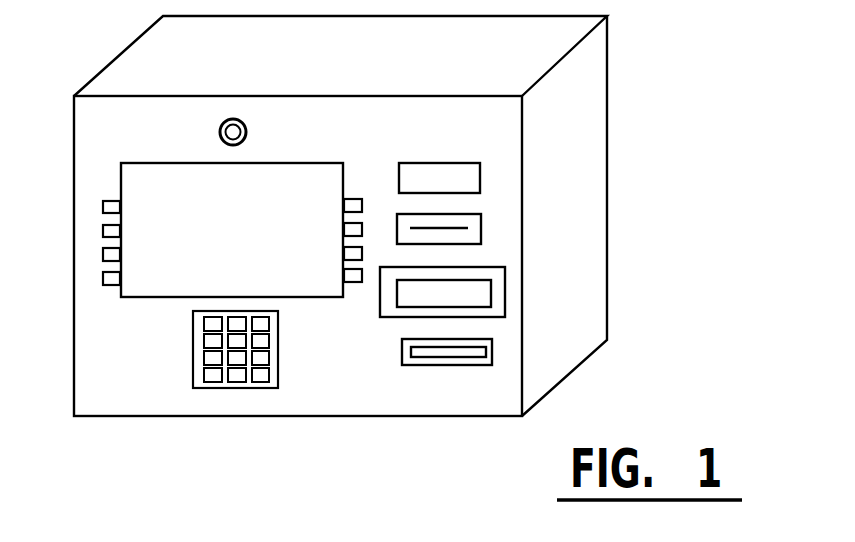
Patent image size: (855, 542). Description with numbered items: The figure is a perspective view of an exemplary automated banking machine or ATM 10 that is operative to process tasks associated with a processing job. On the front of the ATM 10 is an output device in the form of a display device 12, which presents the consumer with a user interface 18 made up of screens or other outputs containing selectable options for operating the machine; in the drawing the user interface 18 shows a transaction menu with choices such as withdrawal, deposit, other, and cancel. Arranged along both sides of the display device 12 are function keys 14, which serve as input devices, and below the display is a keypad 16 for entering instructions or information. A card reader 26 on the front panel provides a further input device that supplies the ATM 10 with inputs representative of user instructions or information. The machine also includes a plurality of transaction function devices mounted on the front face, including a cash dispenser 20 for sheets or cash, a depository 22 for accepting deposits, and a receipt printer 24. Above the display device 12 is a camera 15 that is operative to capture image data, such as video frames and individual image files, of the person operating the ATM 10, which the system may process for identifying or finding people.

The automated banking machine 10 is at (607, 55).
The display device 12 is at (125, 162).
The function keys 14 is at (104, 312).
The camera 15 is at (240, 118).
The keypad 16 is at (218, 413).
The user interface 18 is at (315, 168).
The cash dispenser 20 is at (506, 296).
The depository 22 is at (493, 352).
The receipt printer 24 is at (481, 176).
The card reader 26 is at (482, 230).